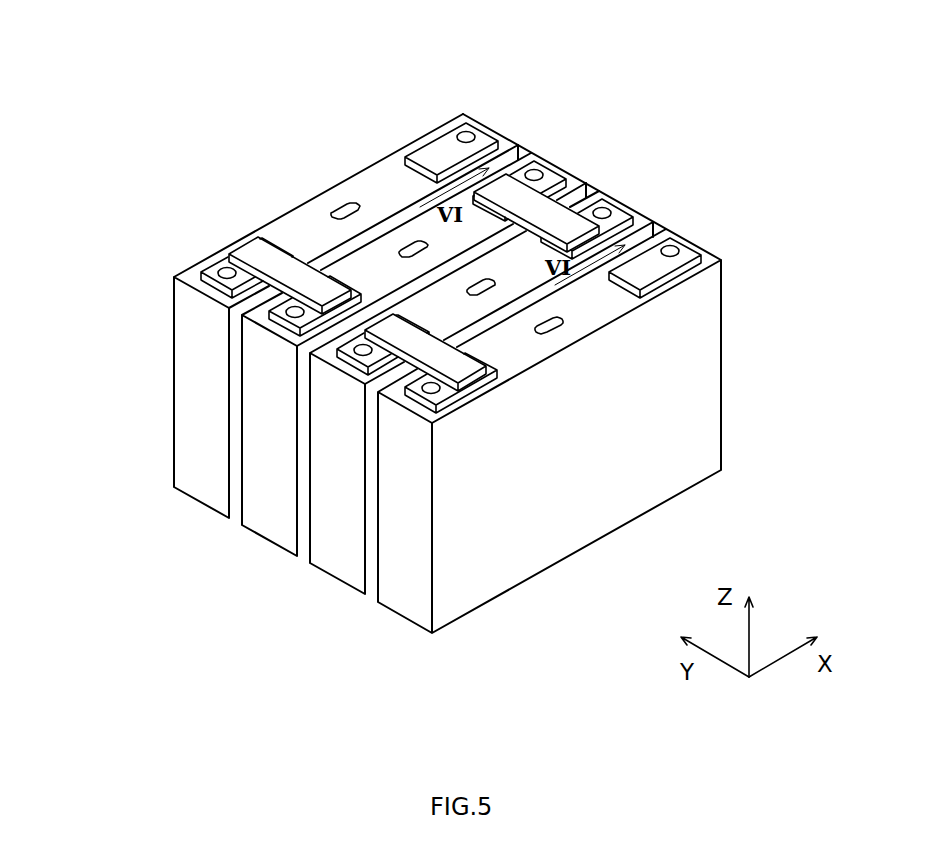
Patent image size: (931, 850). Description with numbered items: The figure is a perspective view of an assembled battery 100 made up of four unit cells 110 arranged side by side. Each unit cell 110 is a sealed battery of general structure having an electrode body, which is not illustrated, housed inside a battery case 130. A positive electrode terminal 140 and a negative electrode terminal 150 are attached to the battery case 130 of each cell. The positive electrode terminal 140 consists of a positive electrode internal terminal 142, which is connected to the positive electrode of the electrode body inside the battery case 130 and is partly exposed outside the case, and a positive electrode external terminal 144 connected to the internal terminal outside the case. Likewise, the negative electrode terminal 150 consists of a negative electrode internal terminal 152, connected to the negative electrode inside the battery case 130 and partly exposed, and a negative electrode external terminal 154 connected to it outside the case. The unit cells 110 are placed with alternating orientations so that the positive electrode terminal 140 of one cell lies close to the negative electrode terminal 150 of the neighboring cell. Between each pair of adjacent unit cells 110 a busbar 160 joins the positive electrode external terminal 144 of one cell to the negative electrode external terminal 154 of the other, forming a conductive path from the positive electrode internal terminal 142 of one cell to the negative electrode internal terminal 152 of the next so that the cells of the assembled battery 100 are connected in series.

The assembled battery 100 is at (191, 49).
The unit cell 110 is at (205, 495).
The battery case 130 is at (493, 575).
The positive electrode terminal 140 is at (207, 193).
The positive electrode internal terminal 142 is at (225, 268).
The positive electrode external terminal 144 is at (208, 270).
The negative electrode terminal 150 is at (503, 50).
The negative electrode internal terminal 152 is at (468, 133).
The negative electrode external terminal 154 is at (450, 130).
The busbar 160 is at (278, 258).